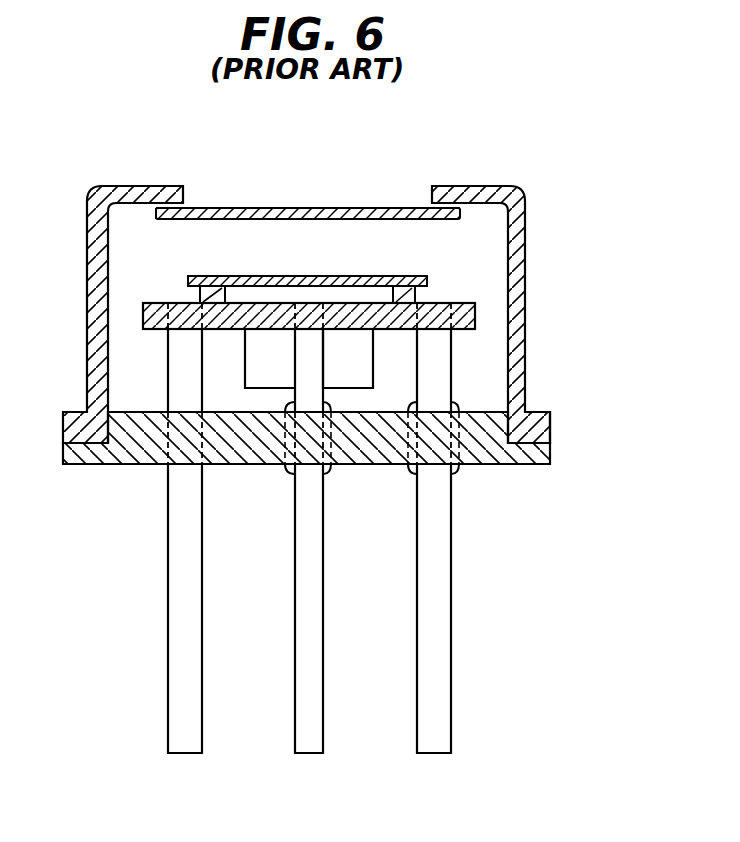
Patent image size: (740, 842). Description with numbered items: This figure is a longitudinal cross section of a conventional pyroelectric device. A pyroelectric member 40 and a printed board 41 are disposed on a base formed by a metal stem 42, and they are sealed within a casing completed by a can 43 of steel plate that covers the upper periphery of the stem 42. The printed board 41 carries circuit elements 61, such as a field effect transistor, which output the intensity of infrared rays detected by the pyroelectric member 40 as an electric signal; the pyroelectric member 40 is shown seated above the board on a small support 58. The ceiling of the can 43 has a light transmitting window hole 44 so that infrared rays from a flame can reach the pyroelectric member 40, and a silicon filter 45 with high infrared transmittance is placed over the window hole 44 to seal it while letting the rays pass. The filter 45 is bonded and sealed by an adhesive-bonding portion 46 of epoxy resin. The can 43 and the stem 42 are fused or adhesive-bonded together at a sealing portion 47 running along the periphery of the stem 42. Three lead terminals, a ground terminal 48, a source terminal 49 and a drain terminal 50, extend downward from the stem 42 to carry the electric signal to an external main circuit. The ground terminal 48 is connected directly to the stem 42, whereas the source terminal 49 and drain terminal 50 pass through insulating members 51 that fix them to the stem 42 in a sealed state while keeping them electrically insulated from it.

The pyroelectric member 40 is at (400, 272).
The printed board 41 is at (475, 318).
The stem 42 is at (110, 455).
The can 43 is at (96, 193).
The window hole 44 is at (185, 197).
The filter 45 is at (365, 207).
The adhesive-bonding portion 46 is at (152, 212).
The sealing portion 47 is at (540, 412).
The ground terminal 48 is at (183, 676).
The source terminal 49 is at (300, 718).
The drain terminal 50 is at (432, 627).
The insulating members 51 is at (286, 472).
The spacer 58 is at (415, 295).
The circuit elements 61 is at (350, 375).